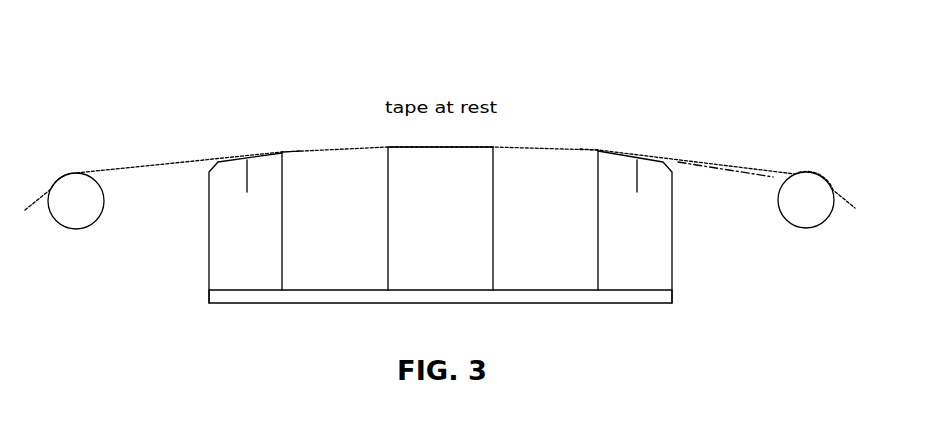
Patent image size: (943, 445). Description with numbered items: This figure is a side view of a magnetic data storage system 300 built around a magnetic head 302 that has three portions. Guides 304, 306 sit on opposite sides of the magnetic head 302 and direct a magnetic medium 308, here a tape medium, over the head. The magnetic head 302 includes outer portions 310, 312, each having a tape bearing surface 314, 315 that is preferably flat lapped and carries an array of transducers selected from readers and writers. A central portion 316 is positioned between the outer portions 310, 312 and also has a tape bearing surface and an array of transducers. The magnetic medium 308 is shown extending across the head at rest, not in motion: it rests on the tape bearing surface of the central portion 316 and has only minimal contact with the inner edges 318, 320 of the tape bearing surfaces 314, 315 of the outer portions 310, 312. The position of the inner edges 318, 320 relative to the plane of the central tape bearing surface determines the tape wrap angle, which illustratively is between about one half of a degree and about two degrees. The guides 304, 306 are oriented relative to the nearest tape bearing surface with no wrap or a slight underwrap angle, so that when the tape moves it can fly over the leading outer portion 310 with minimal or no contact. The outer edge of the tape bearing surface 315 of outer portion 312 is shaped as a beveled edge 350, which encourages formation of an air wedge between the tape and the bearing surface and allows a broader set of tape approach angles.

The magnetic data storage system 300 is at (117, 106).
The magnetic head 302 is at (673, 295).
The guide 304 is at (87, 227).
The guide 306 is at (803, 228).
The magnetic medium 308 is at (747, 167).
The outer portion 310 is at (209, 260).
The outer portion 312 is at (597, 257).
The tape bearing surface 314 is at (233, 157).
The tape bearing surface 315 is at (652, 158).
The central portion 316 is at (387, 257).
The inner edge 318 is at (286, 148).
The inner edge 320 is at (594, 148).
The beveled edge 350 is at (678, 160).